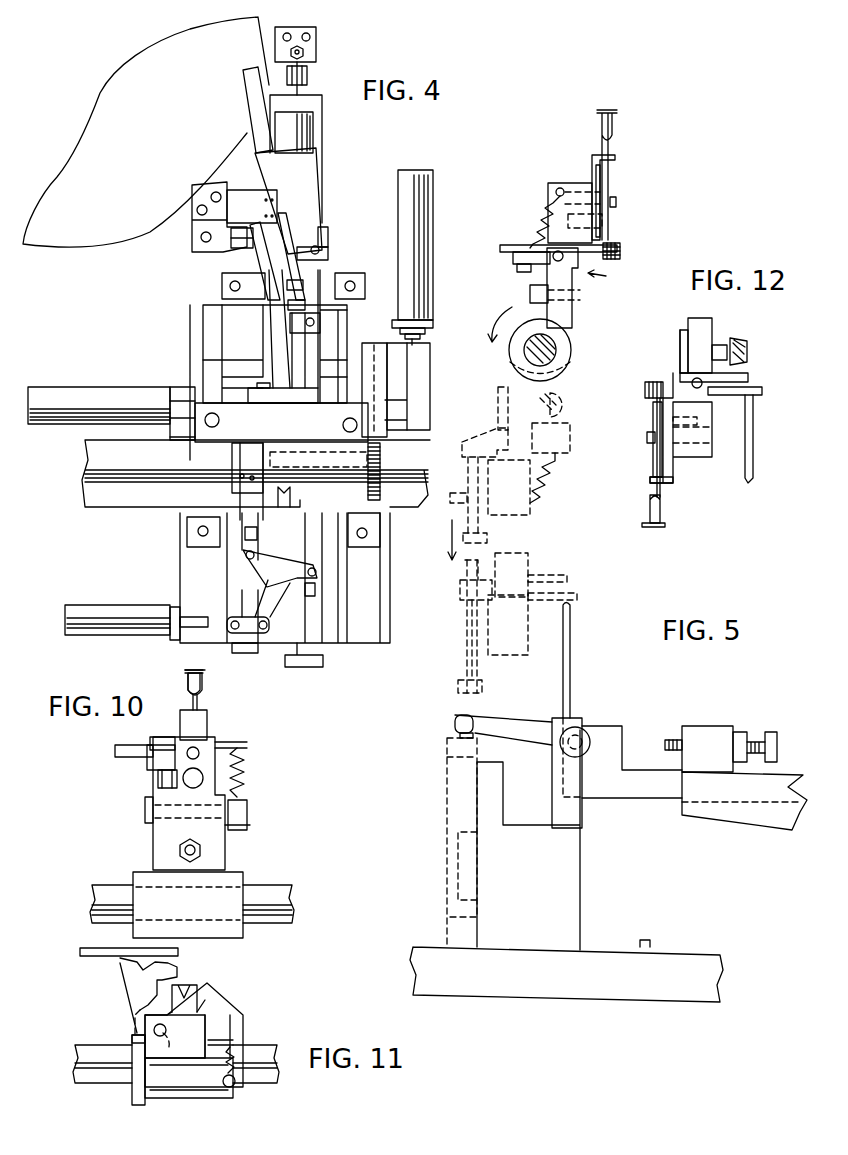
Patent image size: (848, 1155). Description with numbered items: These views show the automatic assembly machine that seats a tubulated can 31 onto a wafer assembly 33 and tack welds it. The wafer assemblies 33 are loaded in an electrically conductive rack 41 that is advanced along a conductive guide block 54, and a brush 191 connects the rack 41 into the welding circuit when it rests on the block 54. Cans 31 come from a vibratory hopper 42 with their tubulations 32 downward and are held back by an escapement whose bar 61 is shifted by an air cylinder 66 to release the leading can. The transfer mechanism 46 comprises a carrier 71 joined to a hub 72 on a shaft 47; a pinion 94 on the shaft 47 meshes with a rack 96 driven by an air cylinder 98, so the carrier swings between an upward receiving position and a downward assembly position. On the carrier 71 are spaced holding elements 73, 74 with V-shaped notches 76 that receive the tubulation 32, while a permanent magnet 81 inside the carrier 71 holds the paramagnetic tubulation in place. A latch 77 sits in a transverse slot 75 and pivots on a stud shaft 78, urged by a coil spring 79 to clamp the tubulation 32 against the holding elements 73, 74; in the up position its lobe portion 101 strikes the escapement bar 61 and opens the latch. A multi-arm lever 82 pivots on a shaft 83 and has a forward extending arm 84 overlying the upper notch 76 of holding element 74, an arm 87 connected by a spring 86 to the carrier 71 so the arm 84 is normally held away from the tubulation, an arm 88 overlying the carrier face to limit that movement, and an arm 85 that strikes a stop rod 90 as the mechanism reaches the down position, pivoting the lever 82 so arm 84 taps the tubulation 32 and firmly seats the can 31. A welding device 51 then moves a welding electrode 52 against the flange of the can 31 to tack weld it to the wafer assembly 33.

In FIG. 4, the tubulated can 31 is at (203, 683).
In FIG. 12, the tubulated can 31 is at (661, 506).
In FIG. 10, the tubulated can 31 is at (204, 690).
In FIG. 4, the tubulation 32 is at (612, 168).
In FIG. 12, the tubulation 32 is at (655, 460).
In FIG. 5, the tubulation 32 is at (466, 660).
In FIG. 4, the wafer assembly 33 is at (240, 485).
In FIG. 5, the rack 41 is at (457, 860).
In FIG. 4, the vibratory hopper 42 is at (111, 226).
In FIG. 4, the transfer mechanism 46 is at (616, 278).
In FIG. 4, the shaft 47 is at (555, 354).
In FIG. 10, the shaft 47 is at (268, 897).
In FIG. 11, the shaft 47 is at (258, 1082).
In FIG. 5, the welding device 51 is at (614, 729).
In FIG. 5, the welding electrode 52 is at (512, 725).
In FIG. 5, the conductive guide block 54 is at (568, 863).
In FIG. 11, the escapement bar 61 is at (80, 949).
In FIG. 4, the air cylinder 66 is at (96, 392).
In FIG. 4, the carrier 71 is at (563, 322).
In FIG. 12, the carrier 71 is at (715, 330).
In FIG. 5, the carrier 71 is at (505, 378).
In FIG. 10, the carrier 71 is at (215, 846).
In FIG. 11, the carrier 71 is at (225, 1008).
In FIG. 4, the hub 72 is at (565, 343).
In FIG. 10, the hub 72 is at (145, 878).
In FIG. 11, the hub 72 is at (172, 1100).
In FIG. 4, the holding element 73 is at (240, 690).
In FIG. 12, the holding element 73 is at (650, 483).
In FIG. 5, the holding element 73 is at (468, 686).
In FIG. 10, the holding element 73 is at (205, 722).
In FIG. 11, the holding element 73 is at (198, 1002).
In FIG. 4, the holding element 74 is at (613, 232).
In FIG. 12, the holding element 74 is at (653, 412).
In FIG. 5, the holding element 74 is at (465, 610).
In FIG. 10, the transverse slot 75 is at (163, 738).
In FIG. 11, the V-shaped notch 76 is at (185, 985).
In FIG. 4, the latch 77 is at (617, 199).
In FIG. 12, the latch 77 is at (647, 437).
In FIG. 5, the latch 77 is at (452, 505).
In FIG. 10, the latch 77 is at (115, 749).
In FIG. 11, the latch 77 is at (120, 990).
In FIG. 10, the stud shaft 78 is at (205, 742).
In FIG. 11, the stud shaft 78 is at (165, 1036).
In FIG. 10, the coil spring 79 is at (158, 778).
In FIG. 11, the coil spring 79 is at (130, 1040).
In FIG. 4, the permanent magnet 81 is at (605, 218).
In FIG. 12, the permanent magnet 81 is at (700, 425).
In FIG. 4, the multi-arm lever 82 is at (573, 260).
In FIG. 12, the multi-arm lever 82 is at (676, 380).
In FIG. 5, the multi-arm lever 82 is at (502, 447).
In FIG. 12, the shaft 83 is at (699, 388).
In FIG. 4, the forward extending arm 84 is at (622, 250).
In FIG. 12, the forward extending arm 84 is at (645, 392).
In FIG. 4, the arm 85 is at (510, 248).
In FIG. 12, the arm 85 is at (762, 392).
In FIG. 5, the arm 85 is at (578, 595).
In FIG. 10, the arm 85 is at (145, 805).
In FIG. 4, the spring 86 is at (538, 222).
In FIG. 10, the spring 86 is at (245, 782).
In FIG. 11, the spring 86 is at (233, 1052).
In FIG. 4, the arm 87 is at (513, 260).
In FIG. 12, the arm 87 is at (748, 376).
In FIG. 5, the arm 87 is at (568, 576).
In FIG. 10, the arm 87 is at (245, 822).
In FIG. 4, the arm 88 is at (582, 288).
In FIG. 12, the arm 88 is at (680, 337).
In FIG. 5, the arm 88 is at (498, 403).
In FIG. 12, the stop rod 90 is at (753, 432).
In FIG. 5, the stop rod 90 is at (565, 673).
In FIG. 4, the pinion 94 is at (378, 454).
In FIG. 4, the rack 96 is at (385, 408).
In FIG. 4, the air cylinder 98 is at (416, 180).
In FIG. 11, the lobe portion 101 is at (122, 966).
In FIG. 5, the brush 191 is at (648, 938).